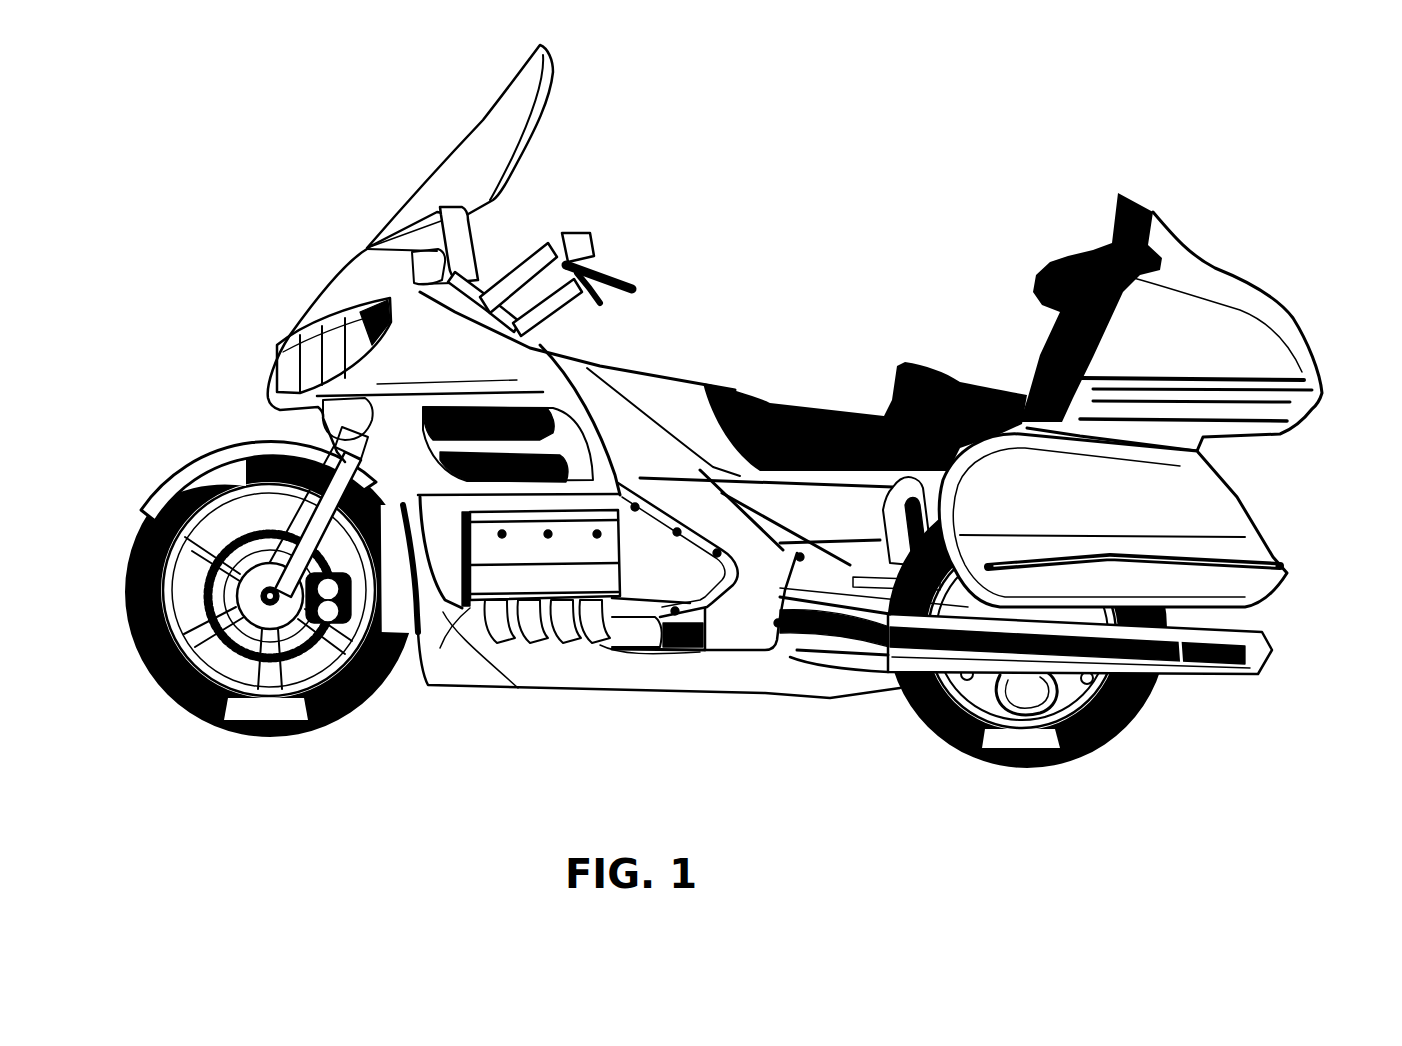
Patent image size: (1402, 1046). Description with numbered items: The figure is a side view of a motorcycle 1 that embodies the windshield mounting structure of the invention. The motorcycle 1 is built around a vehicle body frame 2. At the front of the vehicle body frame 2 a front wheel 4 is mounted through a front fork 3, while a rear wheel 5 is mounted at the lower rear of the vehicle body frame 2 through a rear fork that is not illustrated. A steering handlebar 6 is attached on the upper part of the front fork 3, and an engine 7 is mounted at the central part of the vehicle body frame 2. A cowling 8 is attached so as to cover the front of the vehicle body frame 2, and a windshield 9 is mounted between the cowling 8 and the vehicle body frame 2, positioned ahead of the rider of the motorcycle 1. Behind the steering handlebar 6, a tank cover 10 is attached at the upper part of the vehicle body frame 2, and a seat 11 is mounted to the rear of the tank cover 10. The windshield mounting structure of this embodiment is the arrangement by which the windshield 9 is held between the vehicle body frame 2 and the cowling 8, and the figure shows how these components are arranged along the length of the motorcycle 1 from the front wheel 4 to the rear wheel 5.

The motorcycle 1 is at (816, 410).
The vehicle body frame 2 is at (743, 627).
The front fork 3 is at (300, 520).
The front wheel 4 is at (338, 722).
The rear wheel 5 is at (1087, 757).
The steering handlebar 6 is at (600, 260).
The engine 7 is at (505, 636).
The cowling 8 is at (295, 313).
The windshield 9 is at (480, 128).
The tank cover 10 is at (664, 370).
The seat 11 is at (771, 411).